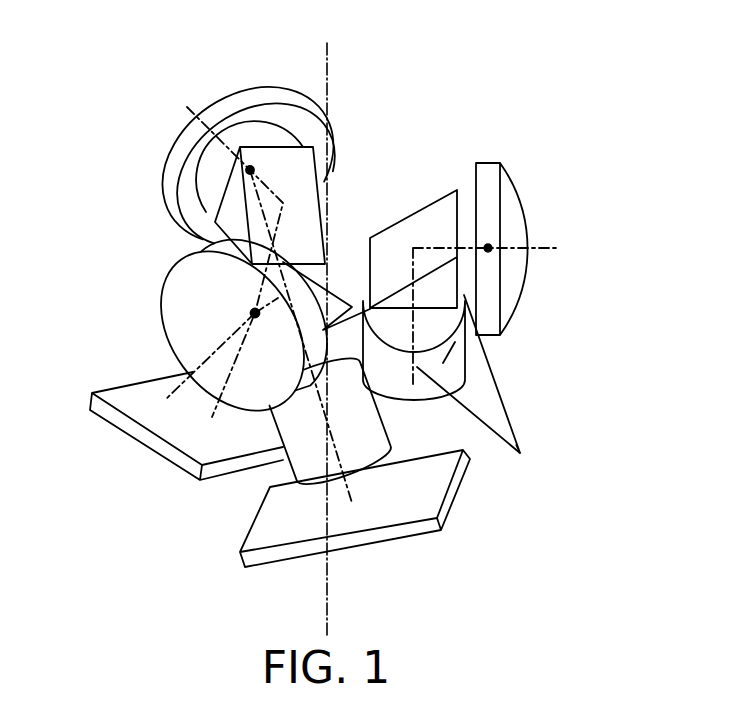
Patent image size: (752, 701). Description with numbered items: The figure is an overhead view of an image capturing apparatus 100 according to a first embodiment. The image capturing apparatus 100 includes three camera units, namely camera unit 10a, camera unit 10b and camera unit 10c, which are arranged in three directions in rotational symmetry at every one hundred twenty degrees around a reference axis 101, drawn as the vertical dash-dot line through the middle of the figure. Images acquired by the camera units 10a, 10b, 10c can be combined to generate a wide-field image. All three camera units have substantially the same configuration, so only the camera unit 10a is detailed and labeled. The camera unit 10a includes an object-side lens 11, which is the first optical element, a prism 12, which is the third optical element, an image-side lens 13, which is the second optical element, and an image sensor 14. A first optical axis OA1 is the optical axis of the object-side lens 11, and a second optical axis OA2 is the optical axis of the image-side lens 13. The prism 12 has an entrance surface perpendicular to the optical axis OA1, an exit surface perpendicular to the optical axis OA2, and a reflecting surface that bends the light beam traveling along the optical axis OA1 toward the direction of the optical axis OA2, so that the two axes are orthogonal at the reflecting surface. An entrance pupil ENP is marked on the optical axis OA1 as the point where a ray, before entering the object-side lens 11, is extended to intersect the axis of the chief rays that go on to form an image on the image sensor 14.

The image capturing apparatus 100 is at (566, 38).
The reference axis 101 is at (327, 73).
The camera unit 10a is at (597, 50).
The camera unit 10b is at (441, 529).
The camera unit 10c is at (177, 154).
The object-side lens 11 is at (502, 165).
The prism 12 is at (445, 212).
The image-side lens 13 is at (462, 315).
The image sensor 14 is at (478, 413).
The first optical axis OA1 is at (440, 245).
The second optical axis OA2 is at (518, 455).
The entrance pupil ENP is at (488, 248).